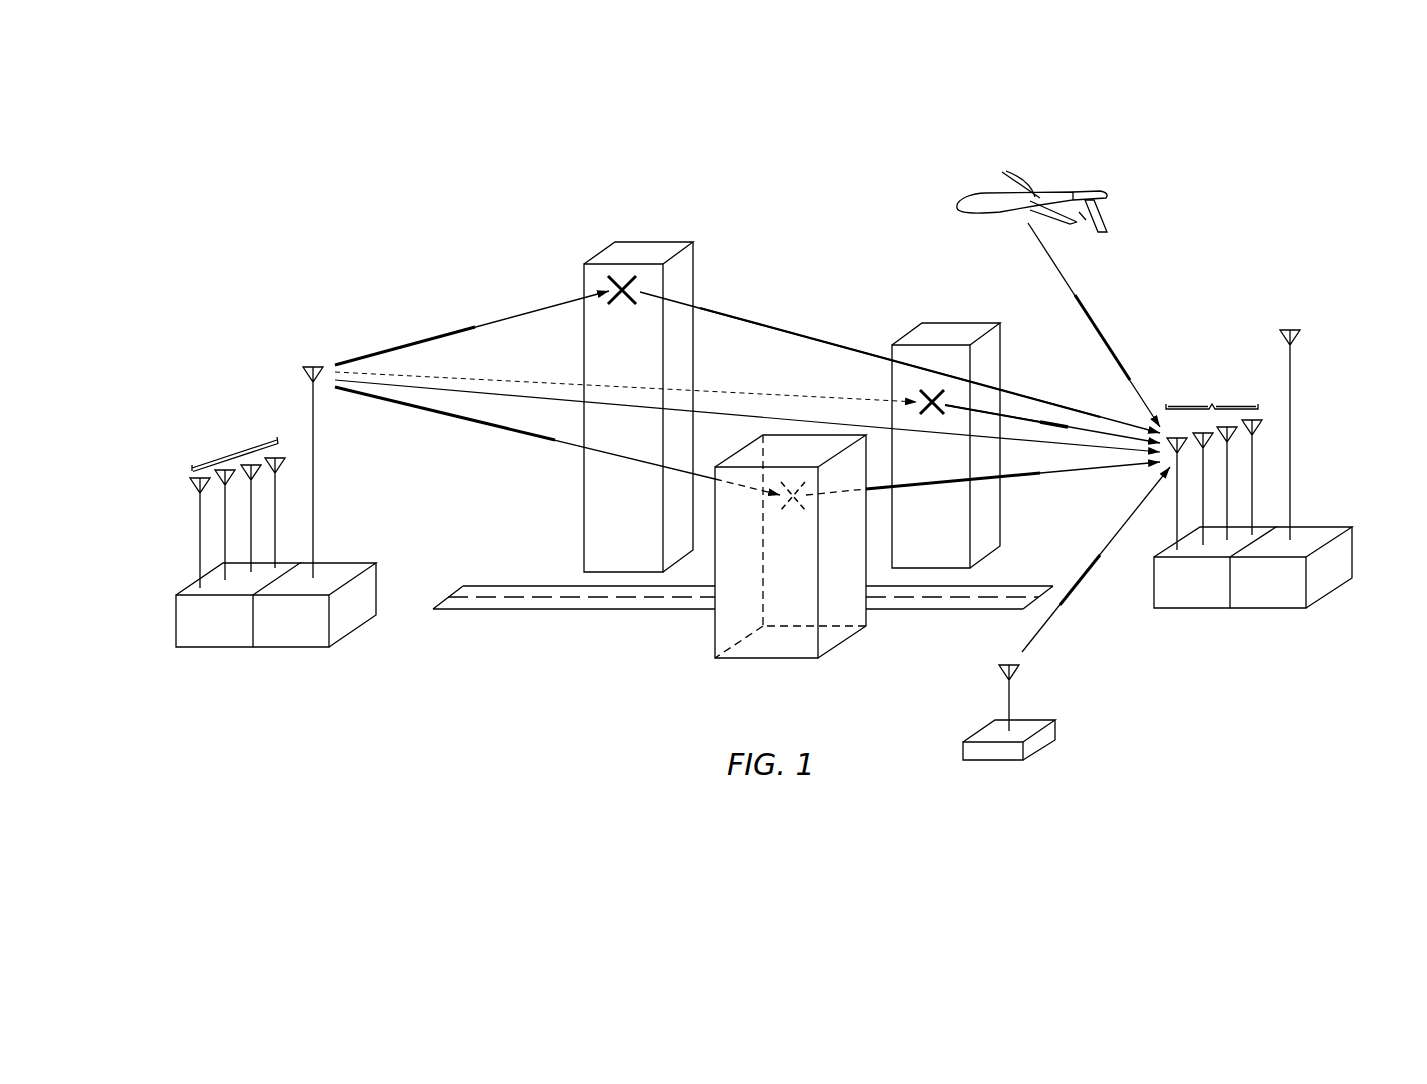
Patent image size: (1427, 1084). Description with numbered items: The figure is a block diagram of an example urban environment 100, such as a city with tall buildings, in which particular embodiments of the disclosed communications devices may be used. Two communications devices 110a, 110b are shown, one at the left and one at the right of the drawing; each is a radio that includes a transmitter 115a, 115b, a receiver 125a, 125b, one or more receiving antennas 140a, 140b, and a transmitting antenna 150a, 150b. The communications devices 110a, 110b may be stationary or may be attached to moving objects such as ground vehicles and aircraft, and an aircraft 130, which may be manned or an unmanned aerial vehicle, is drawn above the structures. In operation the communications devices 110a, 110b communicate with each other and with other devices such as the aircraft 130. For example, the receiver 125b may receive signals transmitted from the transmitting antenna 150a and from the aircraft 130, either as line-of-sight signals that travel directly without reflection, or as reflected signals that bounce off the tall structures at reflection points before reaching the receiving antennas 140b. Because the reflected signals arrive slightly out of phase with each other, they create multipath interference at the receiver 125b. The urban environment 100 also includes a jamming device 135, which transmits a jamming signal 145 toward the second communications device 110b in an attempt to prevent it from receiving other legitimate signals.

The urban environment 100 is at (436, 253).
The communications device 110a is at (264, 531).
The communications device 110b is at (1241, 494).
The transmitter 115a is at (348, 618).
The transmitter 115b is at (1325, 583).
The receiver 125a is at (176, 626).
The receiver 125b is at (1154, 590).
The aircraft 130 is at (1055, 190).
The jamming device 135 is at (1038, 745).
The receiving antennas 140a is at (233, 452).
The receiving antennas 140b is at (1212, 402).
The jamming signal 145 is at (1045, 635).
The transmitting antenna 150a is at (316, 468).
The transmitting antenna 150b is at (1290, 432).